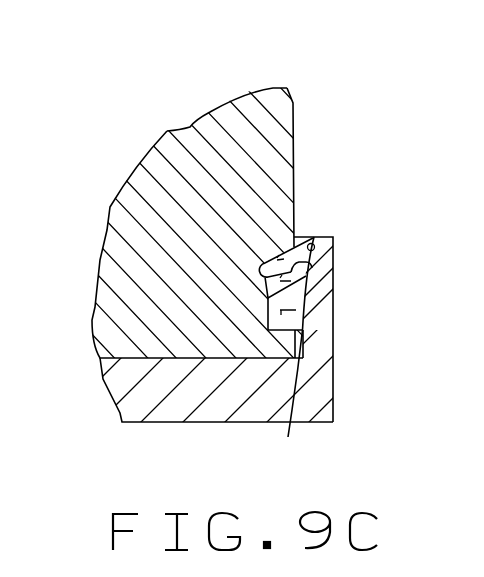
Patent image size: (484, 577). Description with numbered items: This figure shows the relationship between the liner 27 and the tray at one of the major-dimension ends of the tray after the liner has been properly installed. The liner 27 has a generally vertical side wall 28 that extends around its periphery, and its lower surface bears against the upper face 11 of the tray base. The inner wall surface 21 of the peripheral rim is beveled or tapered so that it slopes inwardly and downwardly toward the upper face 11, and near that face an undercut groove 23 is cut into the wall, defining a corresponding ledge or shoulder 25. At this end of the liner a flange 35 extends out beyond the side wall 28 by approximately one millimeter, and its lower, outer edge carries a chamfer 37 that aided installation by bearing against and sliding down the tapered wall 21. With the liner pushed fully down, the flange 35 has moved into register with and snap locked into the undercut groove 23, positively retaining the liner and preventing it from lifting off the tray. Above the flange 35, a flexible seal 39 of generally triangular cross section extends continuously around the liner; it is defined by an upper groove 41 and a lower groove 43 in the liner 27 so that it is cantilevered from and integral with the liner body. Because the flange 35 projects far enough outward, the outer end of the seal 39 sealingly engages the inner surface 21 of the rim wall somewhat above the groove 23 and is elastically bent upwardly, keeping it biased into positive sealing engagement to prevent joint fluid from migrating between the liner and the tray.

The upper face of base 11 is at (160, 357).
The liner 27 is at (302, 86).
The side wall 28 is at (295, 155).
The inner wall surface of the peripheral rim 21 is at (337, 237).
The upper groove 41 is at (312, 243).
The flexible seal 39 is at (310, 265).
The lower groove 43 is at (306, 302).
The ledge or shoulder 25 is at (304, 326).
The undercut groove 23 is at (304, 341).
The flange 35 is at (287, 358).
The chamfer 37 is at (292, 397).